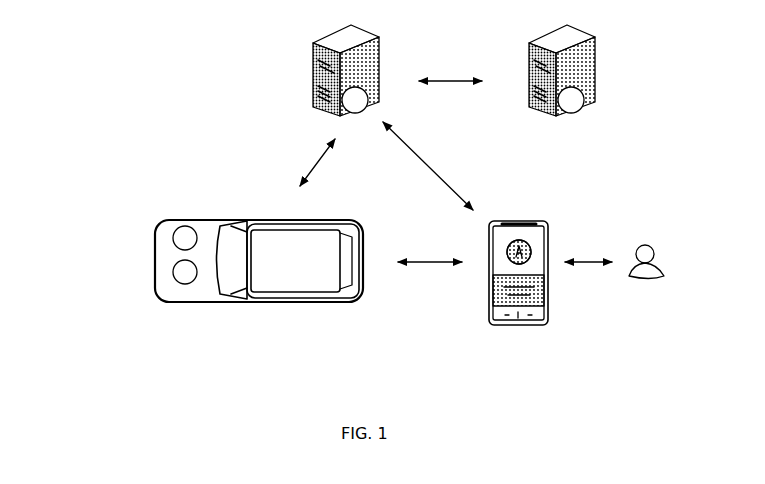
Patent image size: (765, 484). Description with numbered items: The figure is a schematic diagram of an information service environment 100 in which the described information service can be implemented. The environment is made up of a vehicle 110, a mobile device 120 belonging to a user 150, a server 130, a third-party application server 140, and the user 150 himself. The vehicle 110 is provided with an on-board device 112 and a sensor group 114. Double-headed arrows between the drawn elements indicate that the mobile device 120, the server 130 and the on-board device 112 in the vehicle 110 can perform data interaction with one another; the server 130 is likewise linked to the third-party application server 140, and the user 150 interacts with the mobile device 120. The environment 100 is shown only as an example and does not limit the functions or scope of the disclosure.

The information service environment 100 is at (97, 50).
The vehicle 110 is at (335, 219).
The on-board device 112 is at (175, 229).
The sensor group 114 is at (175, 265).
The mobile device 120 is at (520, 216).
The server 130 is at (387, 53).
The third-party application server 140 is at (606, 51).
The user 150 is at (650, 246).